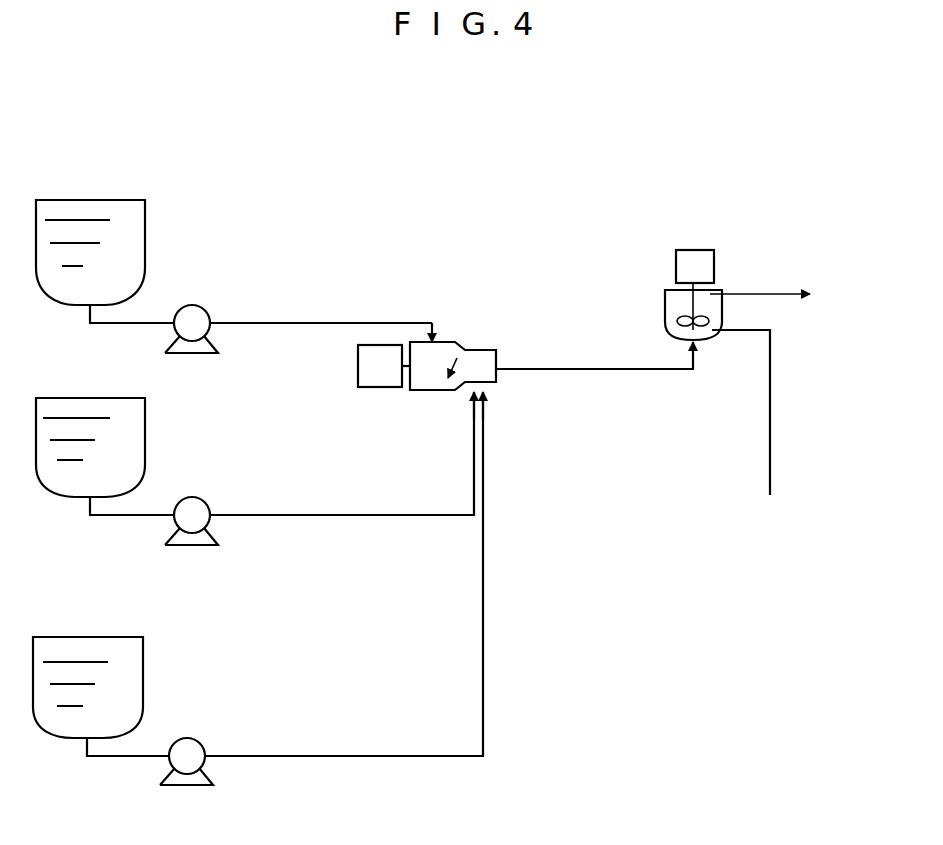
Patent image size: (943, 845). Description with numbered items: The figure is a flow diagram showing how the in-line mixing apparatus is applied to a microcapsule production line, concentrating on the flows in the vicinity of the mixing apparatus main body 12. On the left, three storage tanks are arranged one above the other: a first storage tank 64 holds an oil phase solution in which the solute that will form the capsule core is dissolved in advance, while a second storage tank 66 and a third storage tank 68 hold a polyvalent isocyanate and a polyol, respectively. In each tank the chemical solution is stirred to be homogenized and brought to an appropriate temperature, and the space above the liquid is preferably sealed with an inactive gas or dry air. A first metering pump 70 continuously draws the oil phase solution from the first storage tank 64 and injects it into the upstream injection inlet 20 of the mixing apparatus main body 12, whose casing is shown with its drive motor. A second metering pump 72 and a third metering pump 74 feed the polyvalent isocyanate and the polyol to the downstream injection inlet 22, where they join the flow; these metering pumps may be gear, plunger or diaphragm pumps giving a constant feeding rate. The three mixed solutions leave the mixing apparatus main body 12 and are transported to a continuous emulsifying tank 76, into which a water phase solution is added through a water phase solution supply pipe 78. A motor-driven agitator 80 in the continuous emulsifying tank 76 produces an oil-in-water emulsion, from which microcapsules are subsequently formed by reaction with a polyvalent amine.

The mixing apparatus main body 12 is at (465, 350).
The upstream injection inlet 20 is at (432, 340).
The downstream injection inlet 22 is at (485, 392).
The first storage tank 64 is at (145, 222).
The second storage tank 66 is at (145, 435).
The third storage tank 68 is at (143, 662).
The first metering pump 70 is at (200, 305).
The second metering pump 72 is at (200, 497).
The third metering pump 74 is at (192, 737).
The continuous emulsifying tank 76 is at (665, 292).
The water phase solution supply pipe 78 is at (772, 421).
The agitator 80 is at (680, 314).